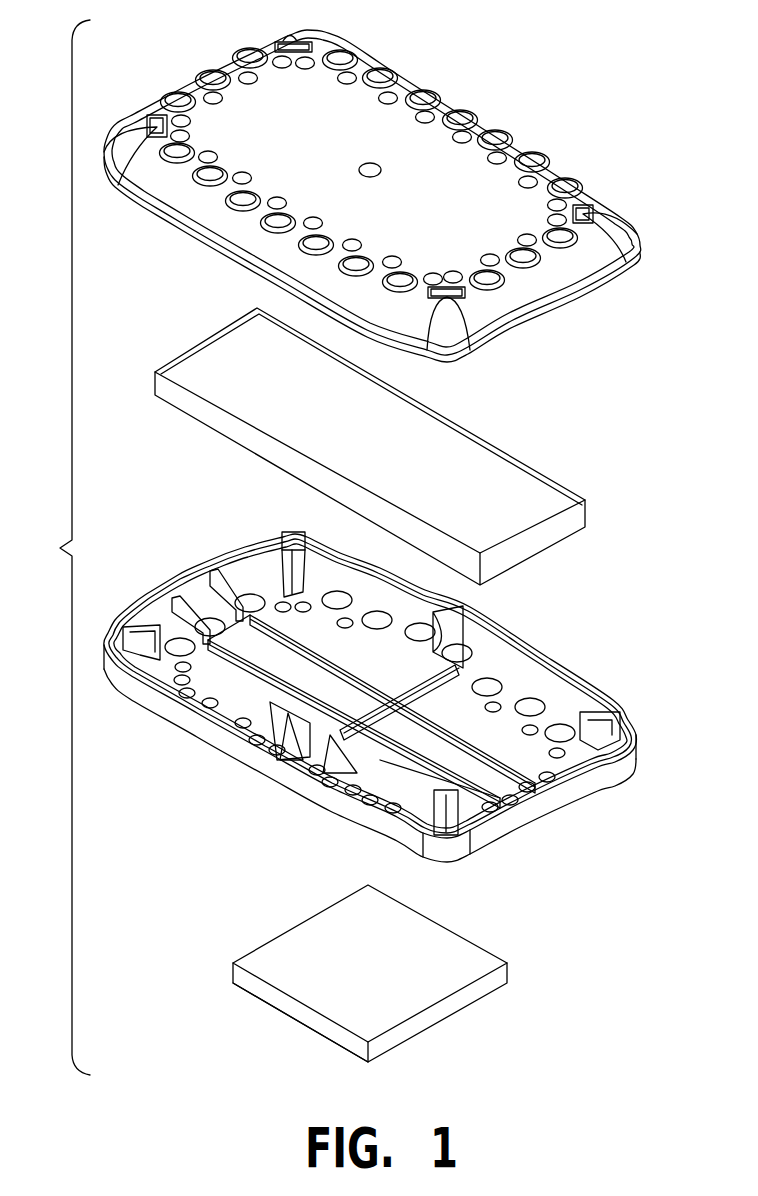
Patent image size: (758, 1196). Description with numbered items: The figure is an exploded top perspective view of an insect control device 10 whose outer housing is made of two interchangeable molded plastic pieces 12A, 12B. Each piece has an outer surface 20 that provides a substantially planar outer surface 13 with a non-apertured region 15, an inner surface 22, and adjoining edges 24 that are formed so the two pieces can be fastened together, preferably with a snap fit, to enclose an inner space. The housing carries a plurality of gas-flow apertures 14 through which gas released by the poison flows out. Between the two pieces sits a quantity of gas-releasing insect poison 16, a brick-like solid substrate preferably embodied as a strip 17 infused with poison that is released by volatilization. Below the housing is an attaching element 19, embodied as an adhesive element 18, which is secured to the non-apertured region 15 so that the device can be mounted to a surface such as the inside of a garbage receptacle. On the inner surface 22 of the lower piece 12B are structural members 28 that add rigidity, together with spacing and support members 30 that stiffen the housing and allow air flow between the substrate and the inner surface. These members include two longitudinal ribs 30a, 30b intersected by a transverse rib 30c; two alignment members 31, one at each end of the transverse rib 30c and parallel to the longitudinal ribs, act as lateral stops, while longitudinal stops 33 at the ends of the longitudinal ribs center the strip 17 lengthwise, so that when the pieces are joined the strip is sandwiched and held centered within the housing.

The insect control device 10 is at (56, 547).
The housing piece 12A is at (187, 84).
The housing piece 12B is at (537, 823).
The substantially planar outer surface 13 is at (503, 218).
The gas-flow apertures 14 is at (633, 247).
The non-apertured region 15 is at (213, 123).
The gas-releasing insect poison 16 is at (480, 440).
The strip 17 is at (356, 419).
The adhesive element 18 is at (445, 1020).
The attaching element 19 is at (307, 1027).
The outer surface 20 is at (410, 133).
The inner surface 22 is at (292, 595).
The adjoining edges 24 is at (220, 257).
The structural members 28 is at (455, 808).
The spacing and support members 30 is at (507, 753).
The longitudinal rib 30a is at (205, 712).
The longitudinal rib 30b is at (468, 735).
The transverse rib 30c is at (372, 735).
The alignment members 31 is at (390, 625).
The longitudinal stops 33 is at (210, 575).